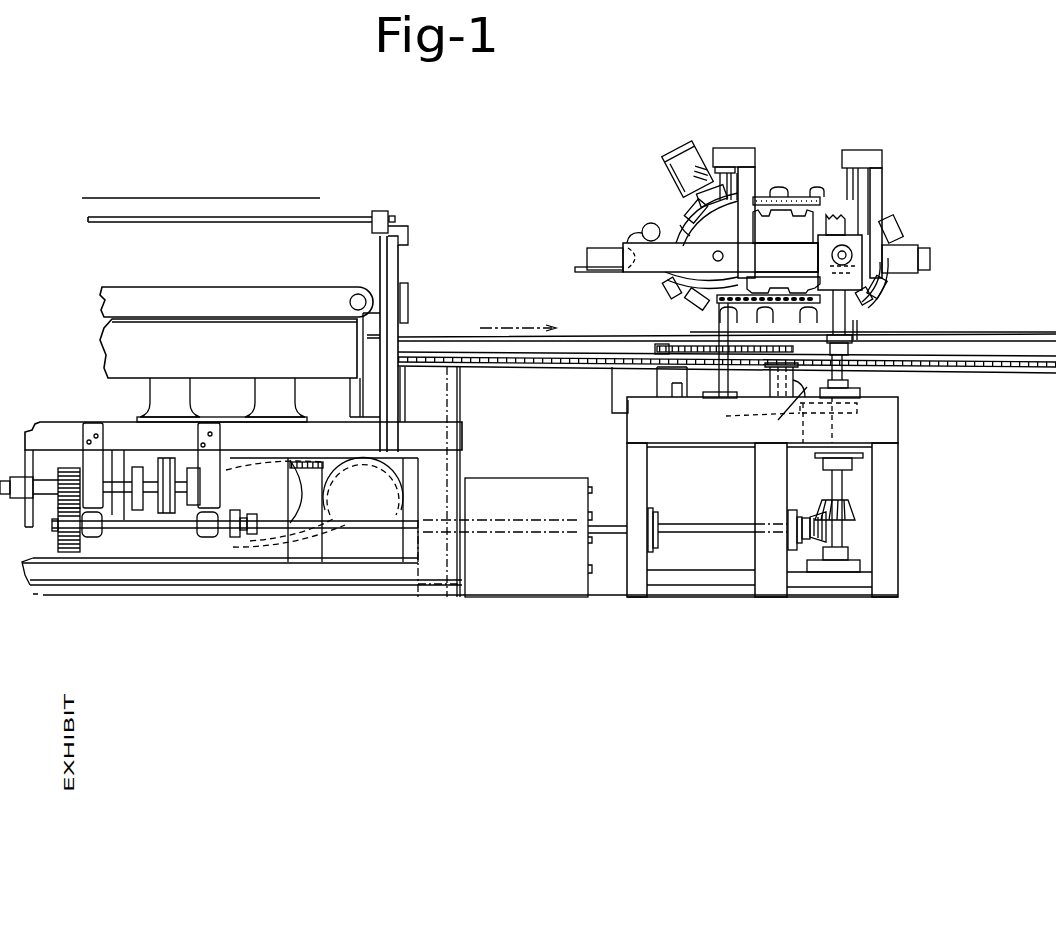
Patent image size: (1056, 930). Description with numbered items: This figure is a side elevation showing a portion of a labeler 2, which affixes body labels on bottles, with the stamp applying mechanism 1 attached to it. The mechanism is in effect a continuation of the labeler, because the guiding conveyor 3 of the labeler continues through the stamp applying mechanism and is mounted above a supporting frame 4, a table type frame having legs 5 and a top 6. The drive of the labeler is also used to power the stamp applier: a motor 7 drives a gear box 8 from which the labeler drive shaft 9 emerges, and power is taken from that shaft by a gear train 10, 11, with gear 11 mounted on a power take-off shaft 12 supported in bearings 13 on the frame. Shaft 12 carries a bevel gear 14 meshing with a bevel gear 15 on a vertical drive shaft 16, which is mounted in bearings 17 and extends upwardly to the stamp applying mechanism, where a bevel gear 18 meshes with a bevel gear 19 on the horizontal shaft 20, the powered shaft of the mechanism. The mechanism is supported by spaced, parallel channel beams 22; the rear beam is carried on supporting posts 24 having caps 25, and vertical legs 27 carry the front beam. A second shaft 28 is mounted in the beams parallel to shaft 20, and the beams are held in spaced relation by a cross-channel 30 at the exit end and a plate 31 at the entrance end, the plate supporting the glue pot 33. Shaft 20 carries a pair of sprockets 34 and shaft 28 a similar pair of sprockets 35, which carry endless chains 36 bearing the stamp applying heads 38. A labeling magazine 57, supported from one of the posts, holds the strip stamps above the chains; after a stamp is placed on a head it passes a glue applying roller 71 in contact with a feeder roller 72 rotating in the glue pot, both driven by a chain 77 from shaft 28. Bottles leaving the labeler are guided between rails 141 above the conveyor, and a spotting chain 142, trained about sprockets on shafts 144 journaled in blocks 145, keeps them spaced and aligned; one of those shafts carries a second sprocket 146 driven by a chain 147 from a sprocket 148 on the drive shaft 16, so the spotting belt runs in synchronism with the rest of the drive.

The stamp applying mechanism 1 is at (818, 115).
The labeler 2 is at (362, 204).
The guiding conveyor 3 is at (512, 366).
The supporting frame 4 is at (916, 438).
The legs 5 is at (757, 463).
The top 6 is at (899, 400).
The motor 7 is at (380, 552).
The gear box 8 is at (270, 473).
The drive shaft 9 is at (128, 477).
The gear 10 is at (72, 470).
The gear 11 is at (58, 542).
The power take-off shaft 12 is at (142, 527).
The bearings 13 is at (657, 518).
The bevel gear 14 is at (808, 530).
The bevel gear 15 is at (851, 517).
The vertical drive shaft 16 is at (843, 492).
The bearings 17 is at (846, 389).
The bevel gear 18 is at (817, 261).
The bevel gear 19 is at (838, 236).
The horizontal shaft 20 is at (845, 254).
The channel beams 22 is at (931, 260).
The supporting posts 24 is at (717, 321).
The caps 25 is at (728, 152).
The vertical legs 27 is at (755, 178).
The second shaft 28 is at (713, 256).
The cross-channel 30 is at (930, 248).
The plate 31 is at (610, 272).
The glue pot 33 is at (593, 258).
The sprockets 34 is at (823, 200).
The sprockets 35 is at (783, 251).
The endless chains 36 is at (791, 190).
The stamp applying heads 38 is at (673, 222).
The labeling magazine 57 is at (677, 150).
The glue applying roller 71 is at (644, 232).
The feeder roller 72 is at (623, 239).
The chain 77 is at (683, 222).
The guide rails 141 is at (462, 358).
The spotting chain 142 is at (677, 360).
The shafts 144 is at (677, 360).
The blocks 145 is at (776, 399).
The second sprocket 146 is at (745, 413).
The chain 147 is at (813, 423).
The sprocket 148 is at (846, 420).